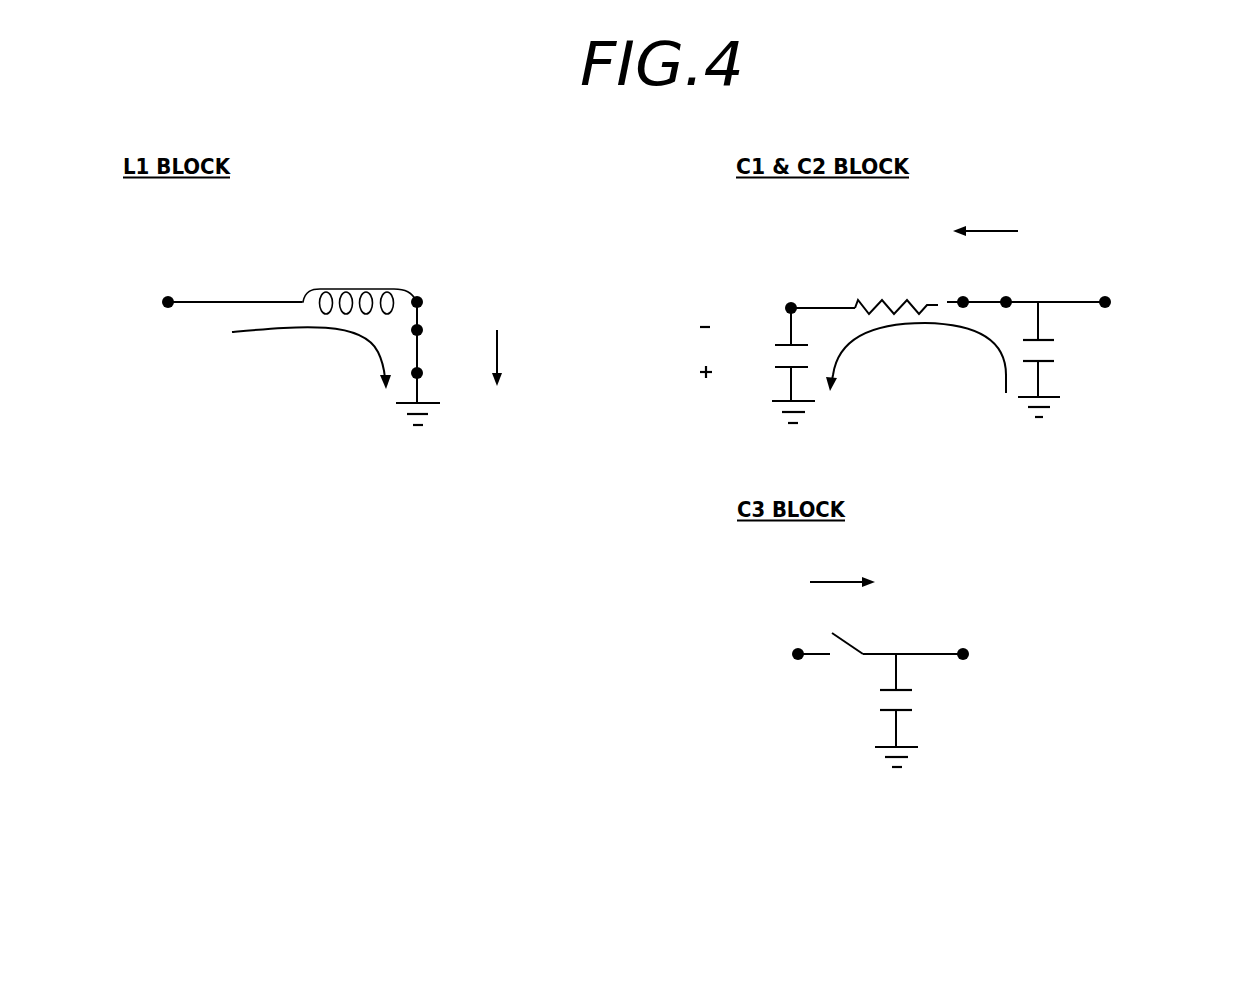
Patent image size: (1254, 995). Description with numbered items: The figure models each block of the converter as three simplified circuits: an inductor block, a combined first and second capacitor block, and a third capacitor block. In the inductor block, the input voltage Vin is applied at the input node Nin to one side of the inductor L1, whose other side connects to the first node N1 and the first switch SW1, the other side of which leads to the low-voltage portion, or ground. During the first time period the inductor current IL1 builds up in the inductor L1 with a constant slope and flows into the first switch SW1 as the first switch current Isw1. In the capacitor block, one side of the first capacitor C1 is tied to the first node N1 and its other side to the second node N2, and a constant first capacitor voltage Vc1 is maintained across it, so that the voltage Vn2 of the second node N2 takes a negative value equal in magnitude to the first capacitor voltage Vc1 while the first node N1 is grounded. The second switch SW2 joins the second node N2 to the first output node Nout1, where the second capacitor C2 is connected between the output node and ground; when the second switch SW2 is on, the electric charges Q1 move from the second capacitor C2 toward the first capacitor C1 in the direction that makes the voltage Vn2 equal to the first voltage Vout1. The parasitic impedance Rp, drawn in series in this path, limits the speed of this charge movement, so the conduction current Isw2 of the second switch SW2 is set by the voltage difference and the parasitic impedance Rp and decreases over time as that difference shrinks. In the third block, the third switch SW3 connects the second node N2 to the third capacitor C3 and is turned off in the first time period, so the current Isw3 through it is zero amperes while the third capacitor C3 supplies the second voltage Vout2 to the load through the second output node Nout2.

The input voltage Vin is at (143, 300).
The input node Nin is at (227, 328).
The inductor L1 is at (359, 283).
The first node N1 is at (613, 337).
The first switch SW1 is at (439, 363).
The inductor current IL1 is at (311, 358).
The first switch current Isw1 is at (525, 358).
The conduction current of the second switch Isw2 is at (985, 211).
The voltage of the second node Vn2 is at (816, 285).
The second node N2 is at (785, 476).
The parasitic impedance Rp is at (896, 284).
The second switch SW2 is at (977, 281).
The first output node Nout1 is at (1064, 281).
The first voltage Vout1 is at (1150, 299).
The first capacitor C1 is at (775, 337).
The first capacitor voltage Vc1 is at (707, 352).
The electric charges Q1 is at (916, 358).
The second capacitor C2 is at (1063, 359).
The current flowing into the third switch Isw3 is at (842, 562).
The third switch SW3 is at (842, 629).
The second output node Nout2 is at (925, 629).
The second voltage Vout2 is at (1003, 655).
The third capacitor C3 is at (921, 710).